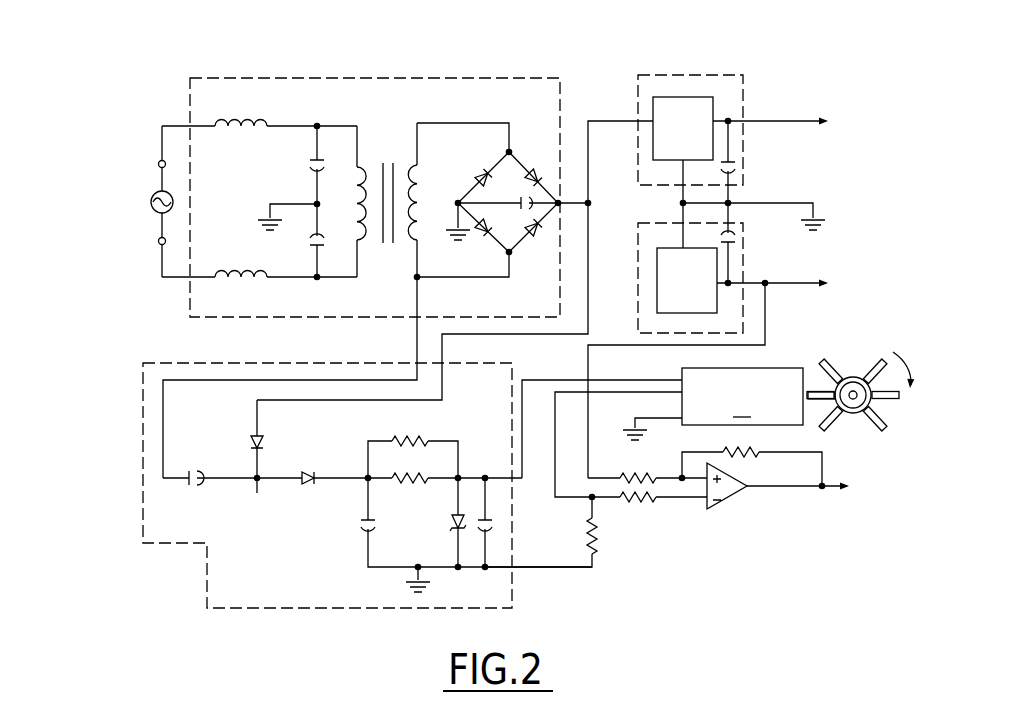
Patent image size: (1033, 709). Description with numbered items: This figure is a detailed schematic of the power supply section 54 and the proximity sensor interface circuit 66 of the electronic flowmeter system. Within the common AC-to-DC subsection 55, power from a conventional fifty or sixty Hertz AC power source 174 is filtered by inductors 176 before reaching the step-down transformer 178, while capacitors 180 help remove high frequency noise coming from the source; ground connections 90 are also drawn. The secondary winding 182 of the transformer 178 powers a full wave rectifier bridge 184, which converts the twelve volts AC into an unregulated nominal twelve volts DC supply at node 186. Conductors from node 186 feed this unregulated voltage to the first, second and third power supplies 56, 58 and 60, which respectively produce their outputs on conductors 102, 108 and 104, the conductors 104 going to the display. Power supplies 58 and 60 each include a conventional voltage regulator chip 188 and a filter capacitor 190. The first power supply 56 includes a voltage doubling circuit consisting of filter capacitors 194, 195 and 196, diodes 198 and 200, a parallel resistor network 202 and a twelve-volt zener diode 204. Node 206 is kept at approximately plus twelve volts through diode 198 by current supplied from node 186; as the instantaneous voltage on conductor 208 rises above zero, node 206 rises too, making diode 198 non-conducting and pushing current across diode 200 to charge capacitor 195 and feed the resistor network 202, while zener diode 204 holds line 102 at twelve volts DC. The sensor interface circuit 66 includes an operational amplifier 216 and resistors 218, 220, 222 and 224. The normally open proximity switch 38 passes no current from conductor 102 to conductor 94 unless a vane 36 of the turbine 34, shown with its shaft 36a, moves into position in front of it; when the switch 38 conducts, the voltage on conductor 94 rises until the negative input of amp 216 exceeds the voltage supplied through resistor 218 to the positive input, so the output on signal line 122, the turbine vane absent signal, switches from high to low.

The common AC-to-DC subsection 55 is at (290, 72).
The inductors 176 is at (241, 122).
The capacitors 180 is at (324, 158).
The ground 90 is at (268, 214).
The AC power source 174 is at (150, 194).
The step-down transformer 178 is at (387, 138).
The secondary winding 182 is at (417, 164).
The full wave rectifier bridge 184 is at (528, 142).
The node 186 is at (590, 175).
The power supply section 54 is at (601, 86).
The voltage regulator chip 188 is at (692, 96).
The third power supply 60 is at (750, 70).
The conductors 104 is at (750, 121).
The filter capacitor 190 is at (738, 162).
The second power supply 58 is at (748, 265).
The conductor 108 is at (806, 282).
The shaft 36a is at (812, 390).
The turbine 34 is at (858, 379).
The vane 36 is at (890, 428).
The proximity switch 38 is at (713, 404).
The conductor 94 is at (553, 381).
The conductor 102 is at (520, 401).
The conductor 208 is at (414, 335).
The filter capacitor 194 is at (210, 451).
The diode 198 is at (262, 440).
The diode 200 is at (330, 465).
The node 206 is at (252, 500).
The parallel resistor network 202 is at (423, 455).
The zener diode 204 is at (455, 536).
The filter capacitor 195 is at (362, 536).
The filter capacitor 196 is at (492, 530).
The first power supply 56 is at (188, 550).
The resistor 222 is at (587, 560).
The resistor 220 is at (661, 499).
The resistor 218 is at (662, 480).
The operational amplifier 216 is at (737, 498).
The resistor 224 is at (750, 455).
The signal line 122 is at (838, 483).
The sensor interface circuit 66 is at (687, 513).